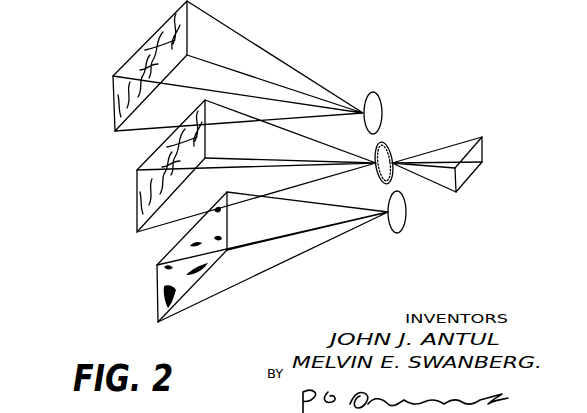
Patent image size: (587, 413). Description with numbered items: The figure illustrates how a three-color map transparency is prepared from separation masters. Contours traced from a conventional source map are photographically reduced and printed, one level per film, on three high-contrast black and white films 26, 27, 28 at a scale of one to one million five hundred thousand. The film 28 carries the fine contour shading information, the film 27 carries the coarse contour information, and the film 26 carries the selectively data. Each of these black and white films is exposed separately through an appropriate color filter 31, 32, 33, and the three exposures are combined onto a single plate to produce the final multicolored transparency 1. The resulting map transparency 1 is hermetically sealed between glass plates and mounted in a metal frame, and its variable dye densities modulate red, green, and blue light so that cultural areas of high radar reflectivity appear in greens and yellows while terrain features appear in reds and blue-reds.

The three-color film transparency 1 is at (468, 176).
The high-contrast black and white film 26 is at (157, 288).
The high-contrast black and white film 27 is at (137, 170).
The high-contrast black and white film 28 is at (113, 76).
The color filter 31 is at (382, 103).
The color filter 32 is at (390, 146).
The color filter 33 is at (406, 211).